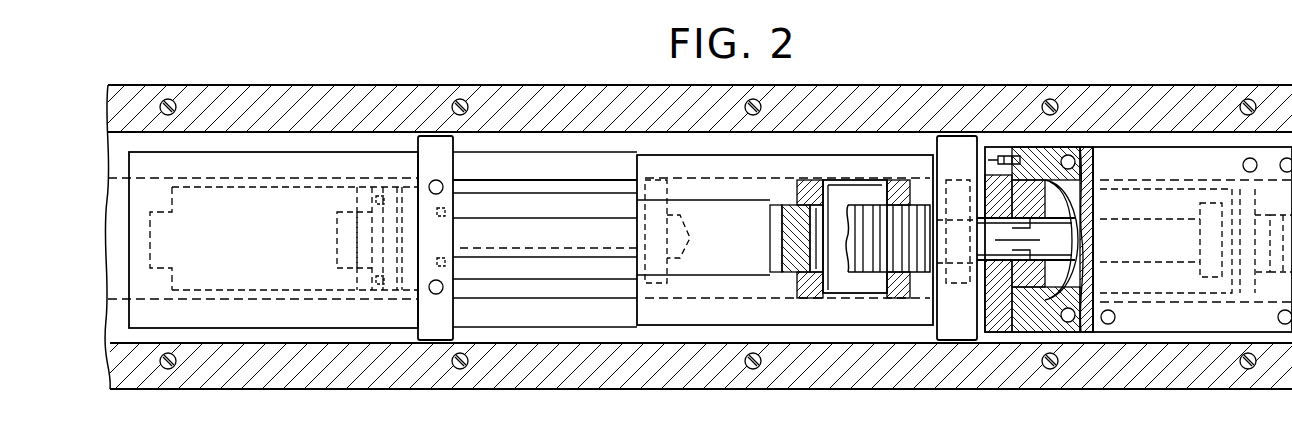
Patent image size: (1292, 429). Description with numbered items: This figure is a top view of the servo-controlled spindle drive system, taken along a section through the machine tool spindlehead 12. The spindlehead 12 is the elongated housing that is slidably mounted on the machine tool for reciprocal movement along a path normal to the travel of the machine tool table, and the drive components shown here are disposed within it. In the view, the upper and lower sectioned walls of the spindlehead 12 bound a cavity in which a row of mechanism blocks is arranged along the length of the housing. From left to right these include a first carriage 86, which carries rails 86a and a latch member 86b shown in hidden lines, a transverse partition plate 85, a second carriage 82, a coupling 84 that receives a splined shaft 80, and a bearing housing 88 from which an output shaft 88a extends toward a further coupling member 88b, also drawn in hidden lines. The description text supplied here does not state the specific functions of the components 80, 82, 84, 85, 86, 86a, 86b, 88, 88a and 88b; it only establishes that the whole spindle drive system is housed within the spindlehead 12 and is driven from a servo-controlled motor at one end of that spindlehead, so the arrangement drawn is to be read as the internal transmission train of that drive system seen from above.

The machine tool spindlehead 12 is at (540, 95).
The splined drive shaft 80 is at (905, 278).
The drive carriage 82 is at (685, 315).
The coupling 84 is at (843, 190).
The partition plate 85 is at (517, 315).
The left carriage 86 is at (300, 160).
The guide rails 86a is at (498, 228).
The carriage latch member 86b is at (337, 248).
The bearing housing 88 is at (1152, 335).
The output shaft 88a is at (1055, 243).
The coupling member 88b is at (1228, 300).